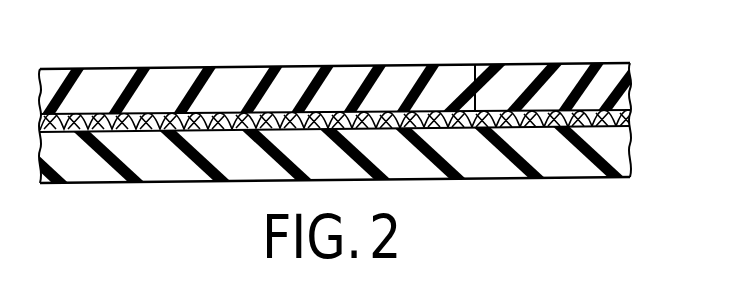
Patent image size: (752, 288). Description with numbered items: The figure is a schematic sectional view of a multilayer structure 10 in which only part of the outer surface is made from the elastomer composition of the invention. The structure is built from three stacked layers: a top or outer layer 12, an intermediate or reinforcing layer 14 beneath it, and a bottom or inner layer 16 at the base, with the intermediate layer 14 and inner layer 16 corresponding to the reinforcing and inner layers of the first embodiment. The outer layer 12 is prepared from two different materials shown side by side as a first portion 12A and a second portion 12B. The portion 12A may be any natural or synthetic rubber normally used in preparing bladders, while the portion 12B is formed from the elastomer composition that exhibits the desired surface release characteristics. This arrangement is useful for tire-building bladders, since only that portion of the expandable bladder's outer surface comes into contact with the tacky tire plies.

The multilayer structure 10 is at (631, 45).
The top or outer layer 12 is at (369, 76).
The portion of the top layer 12A is at (208, 62).
The portion of the top or outer layer 12B is at (563, 58).
The intermediate or reinforcing layer 14 is at (630, 115).
The bottom or inner layer 16 is at (630, 148).